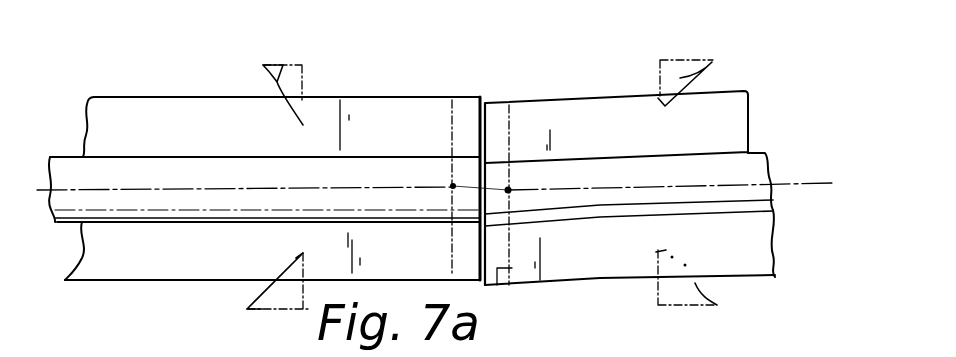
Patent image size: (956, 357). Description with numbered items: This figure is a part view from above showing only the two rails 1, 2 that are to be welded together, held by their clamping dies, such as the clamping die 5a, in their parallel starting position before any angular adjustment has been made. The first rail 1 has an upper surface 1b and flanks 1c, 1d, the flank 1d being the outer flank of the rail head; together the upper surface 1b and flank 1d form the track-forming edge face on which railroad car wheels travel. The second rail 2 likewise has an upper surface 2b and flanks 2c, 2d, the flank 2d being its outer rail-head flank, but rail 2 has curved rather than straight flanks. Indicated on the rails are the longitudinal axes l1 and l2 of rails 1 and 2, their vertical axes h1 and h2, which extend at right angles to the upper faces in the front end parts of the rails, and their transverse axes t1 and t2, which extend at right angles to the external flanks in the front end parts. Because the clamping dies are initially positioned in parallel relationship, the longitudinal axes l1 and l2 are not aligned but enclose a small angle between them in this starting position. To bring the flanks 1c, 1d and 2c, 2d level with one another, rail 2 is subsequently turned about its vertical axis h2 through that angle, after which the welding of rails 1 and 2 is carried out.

The rail 1 is at (98, 140).
The upper surface 1b is at (177, 170).
The flank 1c is at (220, 98).
The outer flank of the rail head 1d is at (152, 278).
The clamping die 5a is at (280, 65).
The rail 2 is at (762, 170).
The upper surface 2b is at (735, 163).
The flank 2c is at (632, 97).
The outer flank of the rail head 2d is at (577, 282).
The longitudinal axis l1 is at (120, 190).
The longitudinal axis l2 is at (746, 172).
The transverse axis t1 is at (452, 117).
The transverse axis t2 is at (508, 115).
The vertical axis h1 is at (453, 186).
The vertical axis h2 is at (510, 190).